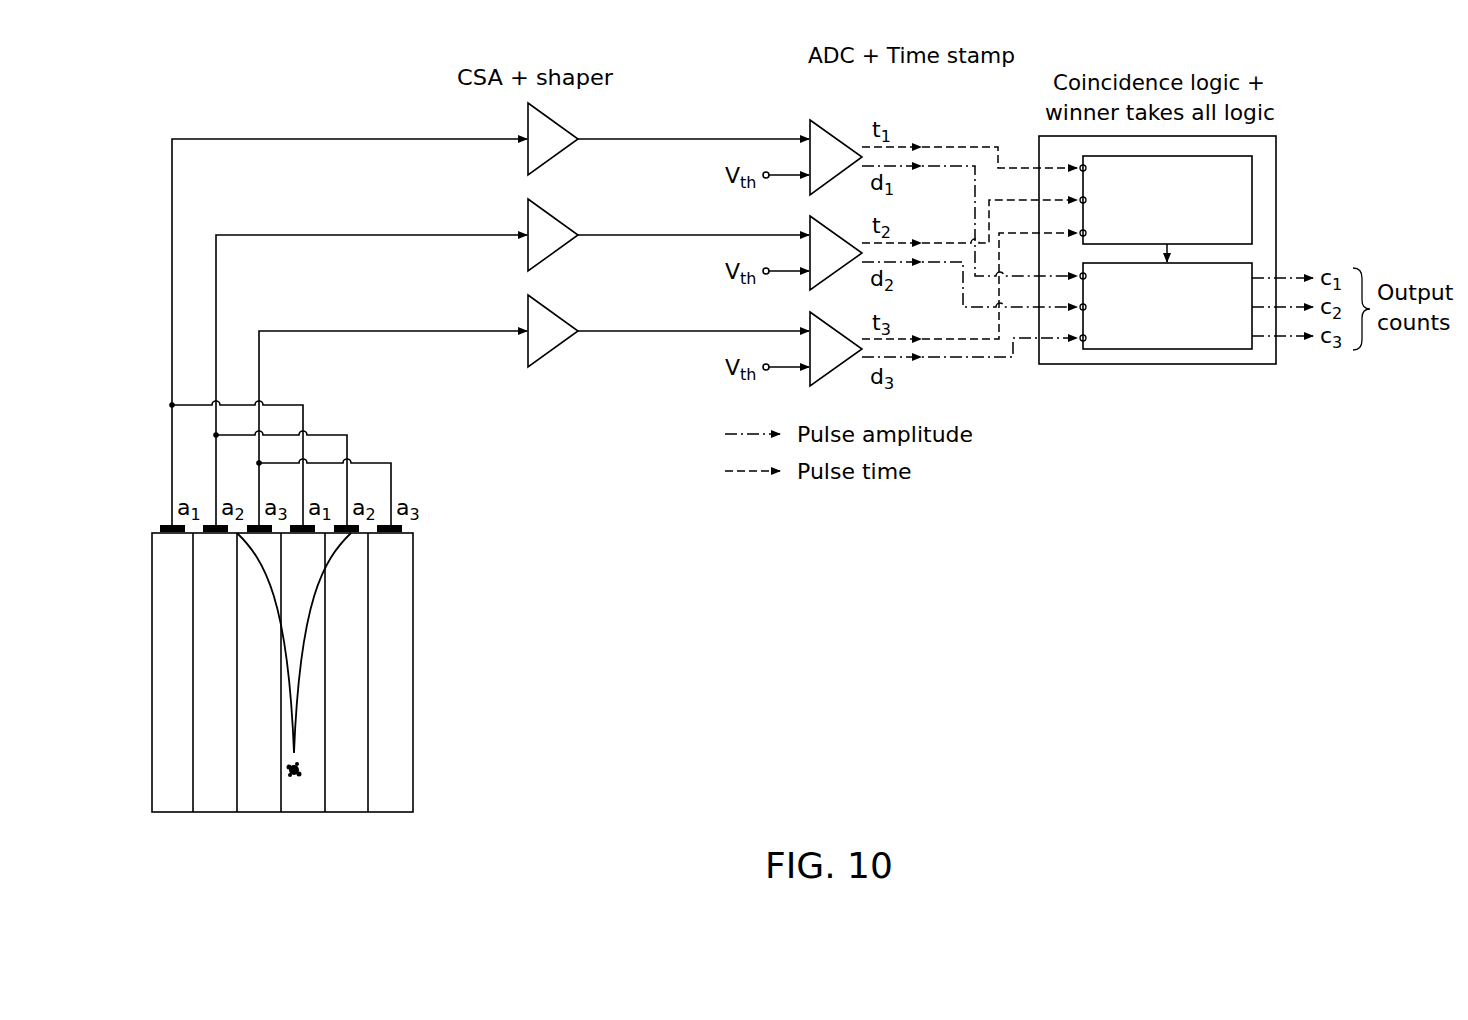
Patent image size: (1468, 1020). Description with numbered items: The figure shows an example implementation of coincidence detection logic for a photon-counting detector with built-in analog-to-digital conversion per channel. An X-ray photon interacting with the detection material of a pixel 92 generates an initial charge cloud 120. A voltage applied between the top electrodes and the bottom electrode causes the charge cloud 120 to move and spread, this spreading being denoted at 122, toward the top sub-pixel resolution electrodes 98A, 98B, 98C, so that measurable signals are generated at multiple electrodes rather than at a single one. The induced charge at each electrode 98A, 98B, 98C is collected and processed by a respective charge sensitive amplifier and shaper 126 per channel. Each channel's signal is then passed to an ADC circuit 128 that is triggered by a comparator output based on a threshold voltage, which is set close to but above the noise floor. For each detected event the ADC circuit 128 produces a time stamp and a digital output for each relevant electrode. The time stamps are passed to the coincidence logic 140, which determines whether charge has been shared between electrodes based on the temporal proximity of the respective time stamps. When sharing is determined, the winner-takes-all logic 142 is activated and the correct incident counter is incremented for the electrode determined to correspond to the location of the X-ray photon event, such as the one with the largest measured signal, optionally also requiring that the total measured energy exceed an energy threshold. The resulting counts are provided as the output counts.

The pixel 92 is at (230, 728).
The sub-pixel resolution electrode 98A is at (172, 533).
The sub-pixel resolution electrode 98B is at (216, 535).
The sub-pixel resolution electrode 98C is at (391, 535).
The charge cloud 120 is at (310, 755).
The spreading of the charge cloud 122 is at (300, 587).
The charge sensitive amplifier and shaper 126 is at (552, 372).
The ADC circuit 128 is at (840, 120).
The coincidence logic 140 is at (1252, 197).
The winner-takes-all logic 142 is at (1160, 350).